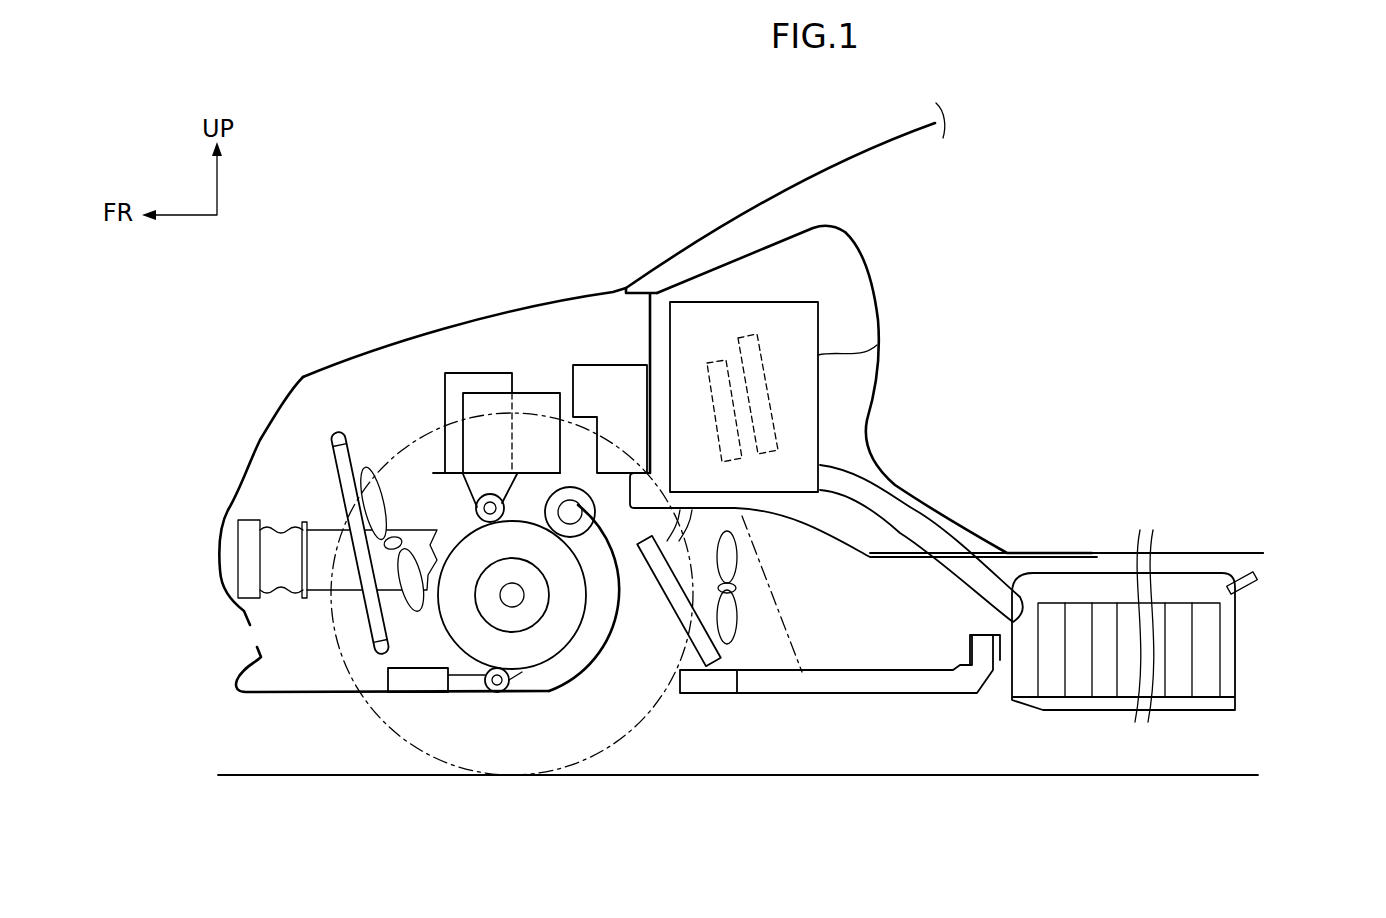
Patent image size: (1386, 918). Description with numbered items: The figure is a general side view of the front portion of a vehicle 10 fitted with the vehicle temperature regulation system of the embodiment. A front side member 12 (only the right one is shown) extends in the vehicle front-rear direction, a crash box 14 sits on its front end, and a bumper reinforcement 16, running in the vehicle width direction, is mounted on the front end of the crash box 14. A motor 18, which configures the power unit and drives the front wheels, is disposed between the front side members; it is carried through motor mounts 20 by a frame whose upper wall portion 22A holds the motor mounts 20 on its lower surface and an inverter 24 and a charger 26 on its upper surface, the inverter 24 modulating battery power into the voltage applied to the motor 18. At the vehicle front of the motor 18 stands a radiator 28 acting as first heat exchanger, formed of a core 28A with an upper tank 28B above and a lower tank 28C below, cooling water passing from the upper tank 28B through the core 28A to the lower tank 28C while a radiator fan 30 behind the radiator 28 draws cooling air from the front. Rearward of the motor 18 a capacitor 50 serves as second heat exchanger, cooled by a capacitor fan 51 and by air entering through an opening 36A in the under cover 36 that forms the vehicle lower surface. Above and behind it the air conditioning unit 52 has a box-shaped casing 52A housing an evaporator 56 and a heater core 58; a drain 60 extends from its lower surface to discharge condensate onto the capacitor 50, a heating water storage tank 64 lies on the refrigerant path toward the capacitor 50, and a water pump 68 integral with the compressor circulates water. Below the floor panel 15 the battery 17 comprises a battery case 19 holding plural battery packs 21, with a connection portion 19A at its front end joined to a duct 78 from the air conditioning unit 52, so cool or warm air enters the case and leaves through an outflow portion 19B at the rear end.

The vehicle 10 is at (480, 228).
The front side member 12 is at (334, 585).
The crash box 14 is at (277, 522).
The bumper reinforcement 16 is at (248, 520).
The motor 18 is at (583, 690).
The battery case 19 is at (413, 747).
The connection portion 19A is at (987, 597).
The outflow portion 19B is at (1262, 575).
The motor mount 20 is at (470, 512).
The battery pack 21 is at (1073, 603).
The upper wall portion 22A is at (447, 500).
The inverter 24 is at (543, 392).
The charger 26 is at (480, 372).
The radiator 28 is at (326, 430).
The core 28A is at (345, 490).
The upper tank 28B is at (342, 430).
The lower tank 28C is at (373, 658).
The radiator fan 30 is at (380, 472).
The under cover 36 is at (497, 692).
The opening 36A is at (673, 673).
The capacitor 50 is at (679, 618).
The capacitor fan 51 is at (737, 562).
The air conditioning unit 52 is at (776, 302).
The casing 52A is at (877, 345).
The evaporator 56 is at (725, 350).
The heater core 58 is at (760, 332).
The drain 60 is at (683, 546).
The heating water storage tank 64 is at (590, 363).
The water pump 68 is at (543, 688).
The duct 78 is at (912, 513).
The floor panel 15 is at (1203, 550).
The battery 17 is at (1158, 571).